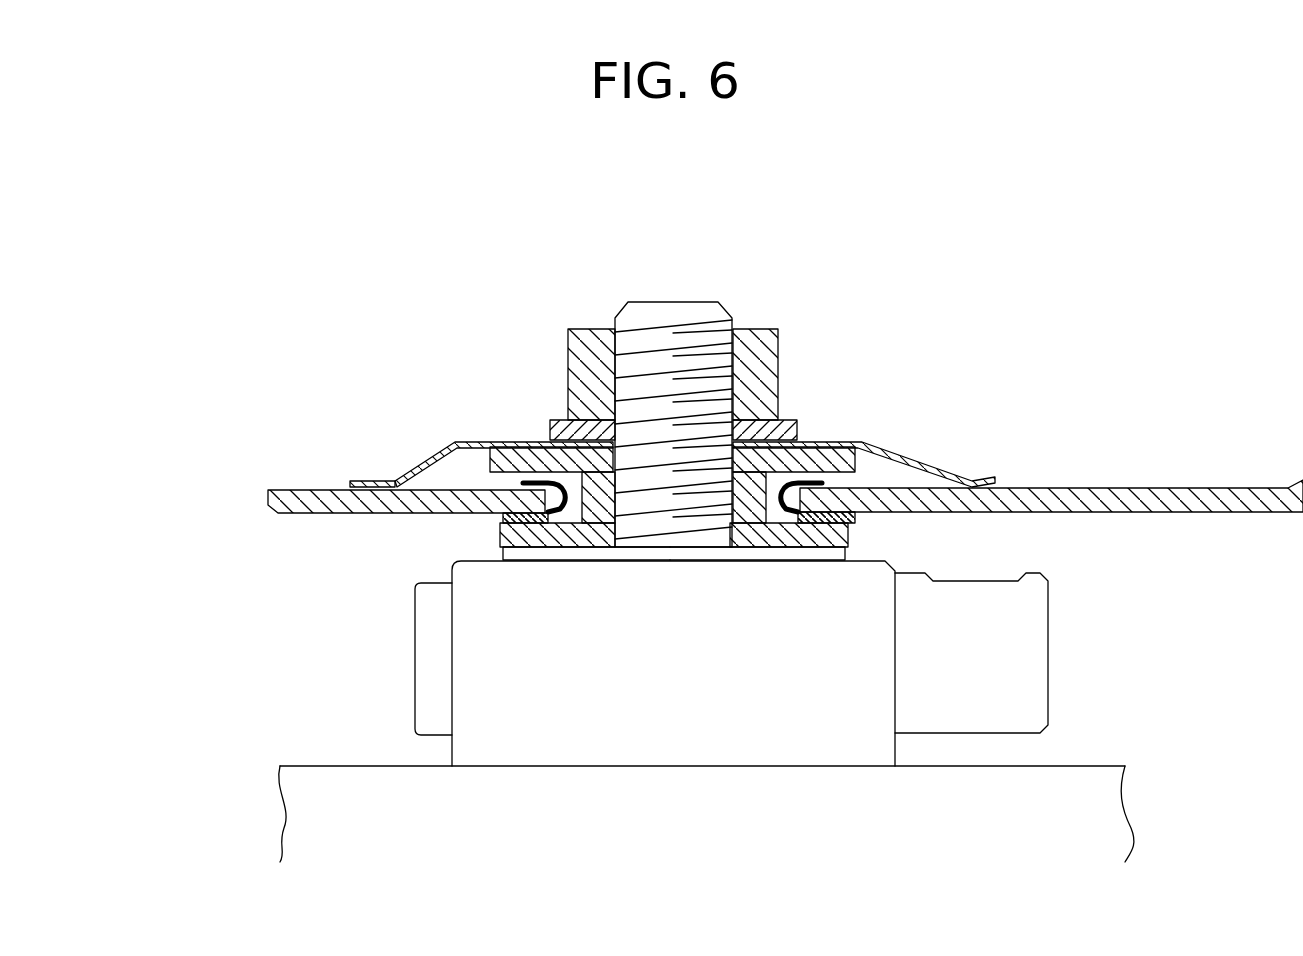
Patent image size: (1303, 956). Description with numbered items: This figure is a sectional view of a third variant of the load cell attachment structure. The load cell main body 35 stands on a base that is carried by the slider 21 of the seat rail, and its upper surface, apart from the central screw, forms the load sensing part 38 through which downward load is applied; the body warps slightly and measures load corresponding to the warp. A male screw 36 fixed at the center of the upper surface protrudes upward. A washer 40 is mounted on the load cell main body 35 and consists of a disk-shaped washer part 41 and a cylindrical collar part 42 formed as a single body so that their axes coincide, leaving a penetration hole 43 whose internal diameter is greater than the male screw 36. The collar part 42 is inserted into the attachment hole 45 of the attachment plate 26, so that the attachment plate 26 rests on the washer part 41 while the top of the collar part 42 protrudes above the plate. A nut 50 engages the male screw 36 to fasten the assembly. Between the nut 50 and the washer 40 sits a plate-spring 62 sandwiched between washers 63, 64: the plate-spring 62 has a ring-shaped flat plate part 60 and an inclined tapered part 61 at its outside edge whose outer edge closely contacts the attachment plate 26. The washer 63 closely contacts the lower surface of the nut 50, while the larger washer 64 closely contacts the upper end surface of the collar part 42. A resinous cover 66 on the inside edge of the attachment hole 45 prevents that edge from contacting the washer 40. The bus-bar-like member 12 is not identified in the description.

The bus bar 12 is at (316, 490).
The slider 21 is at (300, 822).
The attachment plate 26 is at (1150, 487).
The load cell main body 35 is at (475, 683).
The male screw 36 is at (735, 370).
The load sensing part 38 is at (495, 535).
The washer 40 is at (858, 535).
The washer part 41 is at (815, 550).
The collar part 42 is at (766, 482).
The penetration hole 43 is at (618, 514).
The attachment hole 45 is at (552, 450).
The nut 50 is at (580, 330).
The flat plate part 60 is at (548, 436).
The tapered part 61 is at (418, 468).
The plate-spring 62 is at (466, 438).
The washer 63 is at (760, 390).
The washer 64 is at (862, 458).
The resinous cover 66 is at (800, 468).